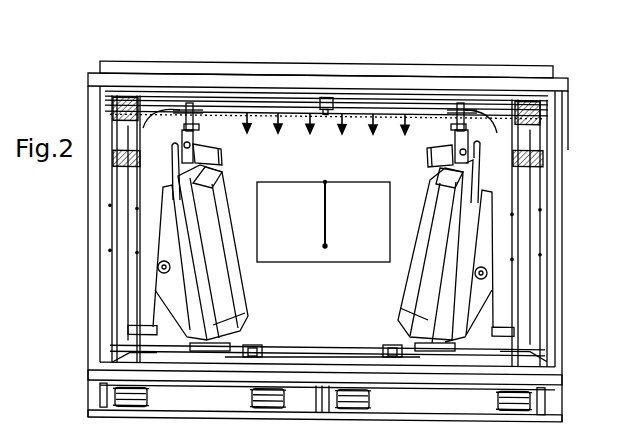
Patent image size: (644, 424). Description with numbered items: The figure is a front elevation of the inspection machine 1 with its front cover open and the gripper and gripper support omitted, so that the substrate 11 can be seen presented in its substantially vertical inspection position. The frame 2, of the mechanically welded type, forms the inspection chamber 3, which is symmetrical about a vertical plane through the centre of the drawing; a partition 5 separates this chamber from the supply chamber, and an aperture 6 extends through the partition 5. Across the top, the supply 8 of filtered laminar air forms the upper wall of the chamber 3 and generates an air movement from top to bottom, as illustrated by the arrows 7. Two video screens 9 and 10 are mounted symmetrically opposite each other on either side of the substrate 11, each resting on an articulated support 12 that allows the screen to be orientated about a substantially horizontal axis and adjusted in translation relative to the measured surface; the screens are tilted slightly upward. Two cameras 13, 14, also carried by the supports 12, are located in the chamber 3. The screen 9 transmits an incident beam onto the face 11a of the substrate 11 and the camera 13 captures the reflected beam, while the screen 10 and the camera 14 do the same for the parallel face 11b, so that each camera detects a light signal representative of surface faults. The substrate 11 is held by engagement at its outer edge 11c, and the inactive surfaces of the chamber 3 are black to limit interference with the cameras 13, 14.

The inspection machine 1 is at (141, 54).
The frame 2 is at (78, 355).
The inspection chamber 3 is at (334, 333).
The partition 5 is at (493, 127).
The aperture 6 is at (353, 182).
The arrows 7 is at (343, 110).
The supply of filtered air 8 is at (180, 68).
The video screen 9 is at (235, 296).
The video screen 10 is at (405, 294).
The substrate 11 is at (324, 246).
The face of the substrate 11a is at (325, 188).
The face of the substrate 11b is at (328, 182).
The outer edge of the substrate 11c is at (326, 182).
The support 12 is at (486, 243).
The camera 13 is at (212, 140).
The camera 14 is at (435, 148).